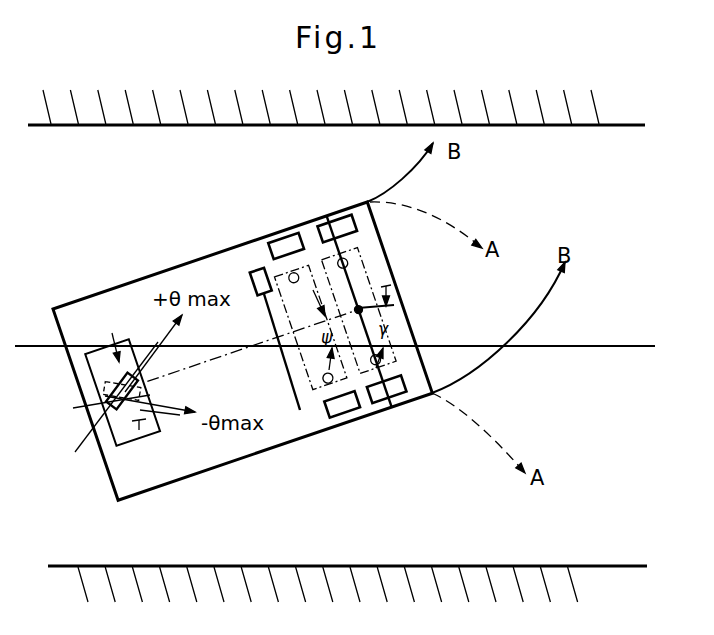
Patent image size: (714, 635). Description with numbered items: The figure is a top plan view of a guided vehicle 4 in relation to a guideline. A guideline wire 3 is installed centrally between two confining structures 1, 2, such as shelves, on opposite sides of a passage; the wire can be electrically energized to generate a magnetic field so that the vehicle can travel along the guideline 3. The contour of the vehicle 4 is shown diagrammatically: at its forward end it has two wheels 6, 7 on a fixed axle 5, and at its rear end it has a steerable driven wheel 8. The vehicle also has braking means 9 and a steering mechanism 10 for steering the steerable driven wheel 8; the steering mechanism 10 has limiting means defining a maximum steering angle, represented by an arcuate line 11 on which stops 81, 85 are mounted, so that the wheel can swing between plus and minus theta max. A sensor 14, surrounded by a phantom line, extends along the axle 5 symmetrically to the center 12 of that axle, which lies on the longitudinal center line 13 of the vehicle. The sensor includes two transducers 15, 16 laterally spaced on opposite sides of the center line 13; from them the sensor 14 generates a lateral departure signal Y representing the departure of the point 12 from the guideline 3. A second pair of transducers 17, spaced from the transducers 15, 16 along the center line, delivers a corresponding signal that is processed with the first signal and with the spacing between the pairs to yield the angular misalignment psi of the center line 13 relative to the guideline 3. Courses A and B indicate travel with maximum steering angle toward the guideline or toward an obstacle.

The confining structure 1 is at (145, 127).
The confining structure 2 is at (176, 565).
The guideline wire 3 is at (603, 345).
The vehicle 4 is at (142, 291).
The fixed axle 5 is at (361, 306).
The wheel 6 is at (333, 230).
The wheel 7 is at (381, 398).
The steerable driven wheel 8 is at (106, 408).
The braking means 9 is at (252, 280).
The steering mechanism 10 is at (98, 366).
The arcuate line 11 is at (180, 415).
The center of axle 12 is at (362, 303).
The longitudinal center line 13 is at (207, 363).
The sensor 14 is at (381, 361).
The transducer 15 is at (346, 260).
The transducer 16 is at (349, 413).
The second pair of transducers 17 is at (291, 283).
The stop 81 is at (111, 337).
The stop 85 is at (140, 430).